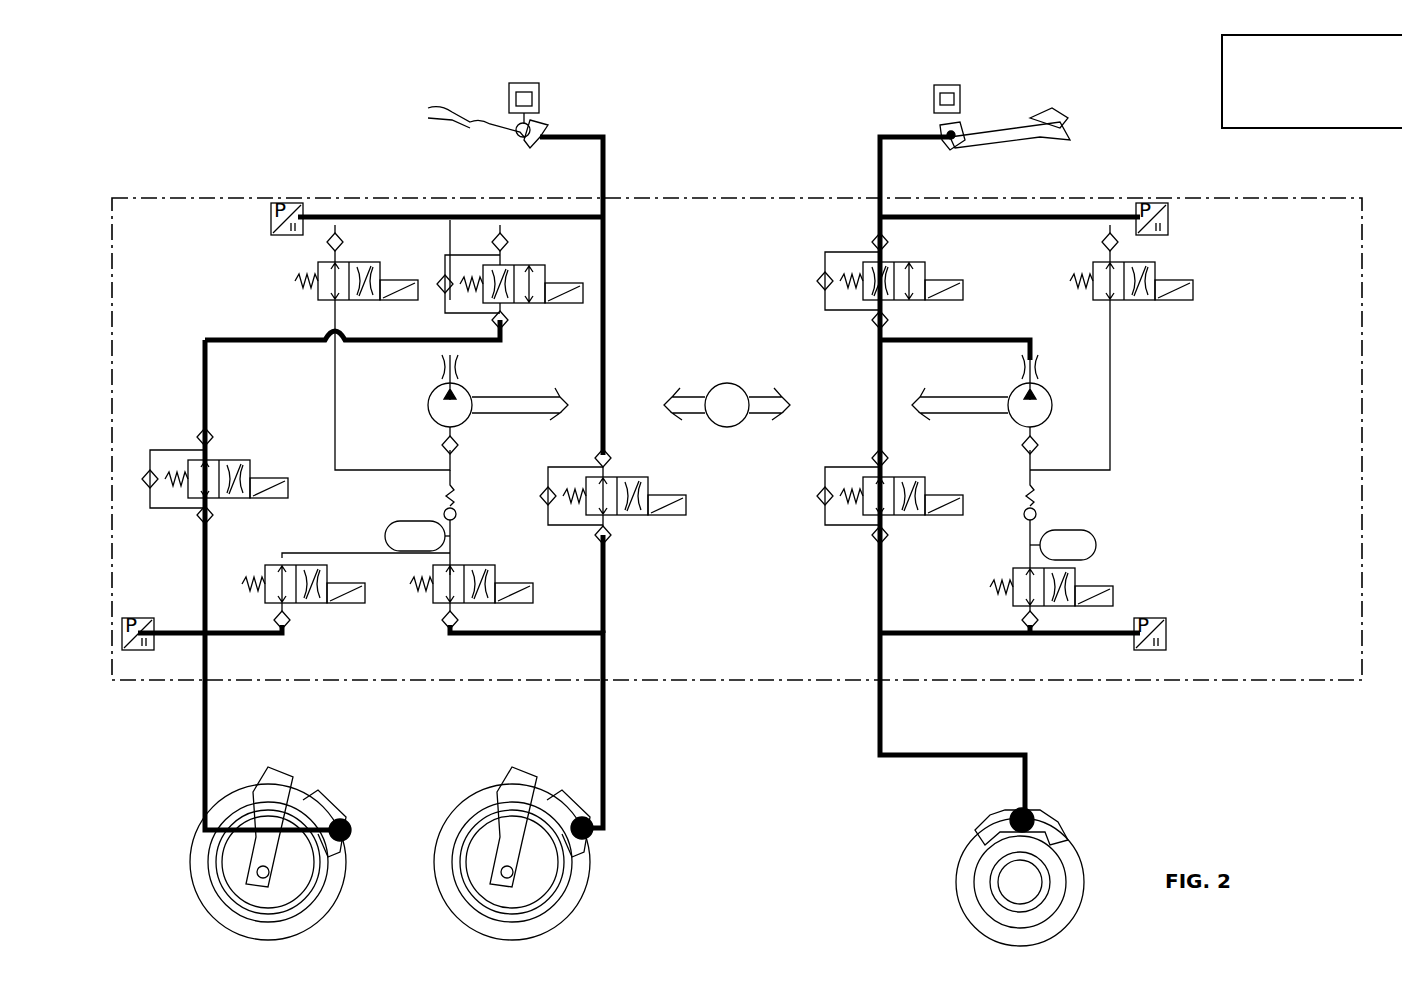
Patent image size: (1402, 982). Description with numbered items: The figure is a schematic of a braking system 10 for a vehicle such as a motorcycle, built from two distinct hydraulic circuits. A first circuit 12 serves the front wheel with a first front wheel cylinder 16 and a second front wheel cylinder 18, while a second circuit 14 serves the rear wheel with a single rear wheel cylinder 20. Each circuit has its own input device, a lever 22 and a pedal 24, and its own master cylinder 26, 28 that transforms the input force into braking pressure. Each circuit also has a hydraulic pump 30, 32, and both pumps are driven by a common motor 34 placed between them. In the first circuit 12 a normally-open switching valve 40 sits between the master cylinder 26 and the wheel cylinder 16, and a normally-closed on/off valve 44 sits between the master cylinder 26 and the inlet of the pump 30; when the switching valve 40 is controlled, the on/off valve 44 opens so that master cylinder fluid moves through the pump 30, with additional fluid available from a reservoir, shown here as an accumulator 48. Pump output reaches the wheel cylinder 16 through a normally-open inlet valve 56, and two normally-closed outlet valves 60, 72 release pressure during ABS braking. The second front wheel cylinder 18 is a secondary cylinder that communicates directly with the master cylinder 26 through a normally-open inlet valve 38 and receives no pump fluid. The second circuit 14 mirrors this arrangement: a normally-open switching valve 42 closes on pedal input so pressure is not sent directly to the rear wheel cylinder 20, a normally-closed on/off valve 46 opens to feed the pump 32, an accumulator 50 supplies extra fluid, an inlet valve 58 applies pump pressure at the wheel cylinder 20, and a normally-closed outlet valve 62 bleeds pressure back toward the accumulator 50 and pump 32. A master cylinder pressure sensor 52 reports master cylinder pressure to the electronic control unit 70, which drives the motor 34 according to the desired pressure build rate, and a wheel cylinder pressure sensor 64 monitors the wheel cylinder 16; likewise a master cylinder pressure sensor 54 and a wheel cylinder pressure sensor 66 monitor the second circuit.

The braking system 10 is at (765, 886).
The first circuit 12 is at (204, 300).
The second circuit 14 is at (1178, 466).
The first front wheel cylinder 16 is at (348, 860).
The second front wheel cylinder 18 is at (592, 866).
The rear wheel cylinder 20 is at (1052, 835).
The input device 22 is at (430, 120).
The input device 24 is at (1060, 112).
The master cylinder 26 is at (564, 121).
The master cylinder 28 is at (914, 118).
The hydraulic pump 30 is at (428, 412).
The hydraulic pump 32 is at (1050, 386).
The motor 34 is at (742, 385).
The normally-open inlet valve 38 is at (625, 515).
The normally-open switching valve 40 is at (520, 303).
The normally-open switching valve 42 is at (925, 300).
The normally-closed on/off valve 44 is at (352, 300).
The normally-closed on/off valve 46 is at (1130, 300).
The accumulator 48 is at (385, 538).
The accumulator 50 is at (1096, 541).
The master cylinder pressure sensor 52 is at (271, 220).
The master cylinder pressure sensor 54 is at (1168, 226).
The normally-open inlet valve 56 is at (245, 468).
The inlet valve 58 is at (900, 515).
The normally-closed outlet valve 60 is at (268, 572).
The normally-closed outlet valve 62 is at (1080, 584).
The wheel cylinder pressure sensor 64 is at (145, 618).
The wheel cylinder pressure sensor 66 is at (1168, 640).
The electronic control unit 70 is at (1222, 45).
The normally-closed outlet valve 72 is at (500, 570).